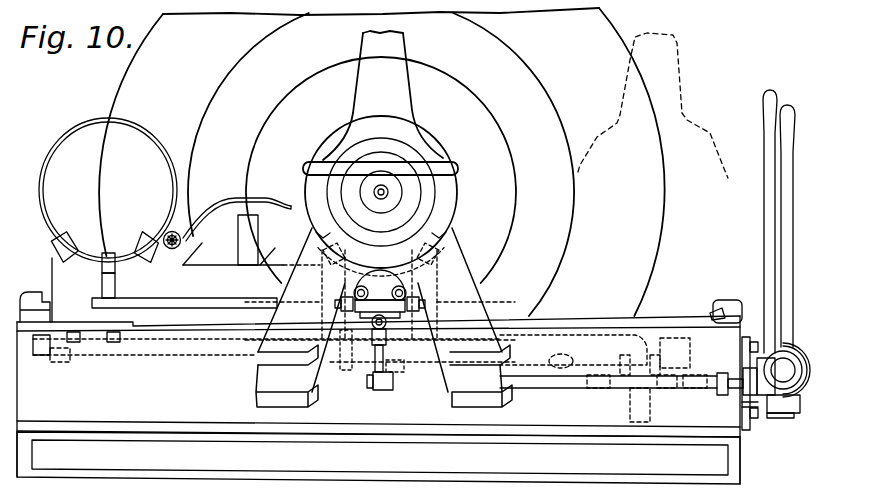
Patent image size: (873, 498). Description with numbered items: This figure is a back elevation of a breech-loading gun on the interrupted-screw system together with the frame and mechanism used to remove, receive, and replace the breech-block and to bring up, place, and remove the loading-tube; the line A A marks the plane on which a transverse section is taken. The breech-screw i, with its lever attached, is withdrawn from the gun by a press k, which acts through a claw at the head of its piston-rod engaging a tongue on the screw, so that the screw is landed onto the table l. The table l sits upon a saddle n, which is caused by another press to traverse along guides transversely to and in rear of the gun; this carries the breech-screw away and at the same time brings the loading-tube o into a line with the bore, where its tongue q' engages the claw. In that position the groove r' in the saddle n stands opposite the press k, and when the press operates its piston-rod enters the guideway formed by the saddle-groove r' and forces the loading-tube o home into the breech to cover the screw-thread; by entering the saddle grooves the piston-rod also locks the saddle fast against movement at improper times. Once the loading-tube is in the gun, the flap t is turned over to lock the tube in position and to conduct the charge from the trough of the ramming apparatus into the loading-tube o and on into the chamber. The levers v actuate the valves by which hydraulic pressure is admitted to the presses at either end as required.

The section line A A is at (383, 0).
The loading-tube o is at (110, 190).
The flap t is at (237, 223).
The saddle n is at (151, 290).
The tongue q' is at (108, 263).
The groove r' is at (108, 285).
The breech-screw i is at (381, 192).
The table l is at (381, 214).
The clamp h is at (380, 330).
The press k is at (637, 378).
The levers v is at (779, 254).